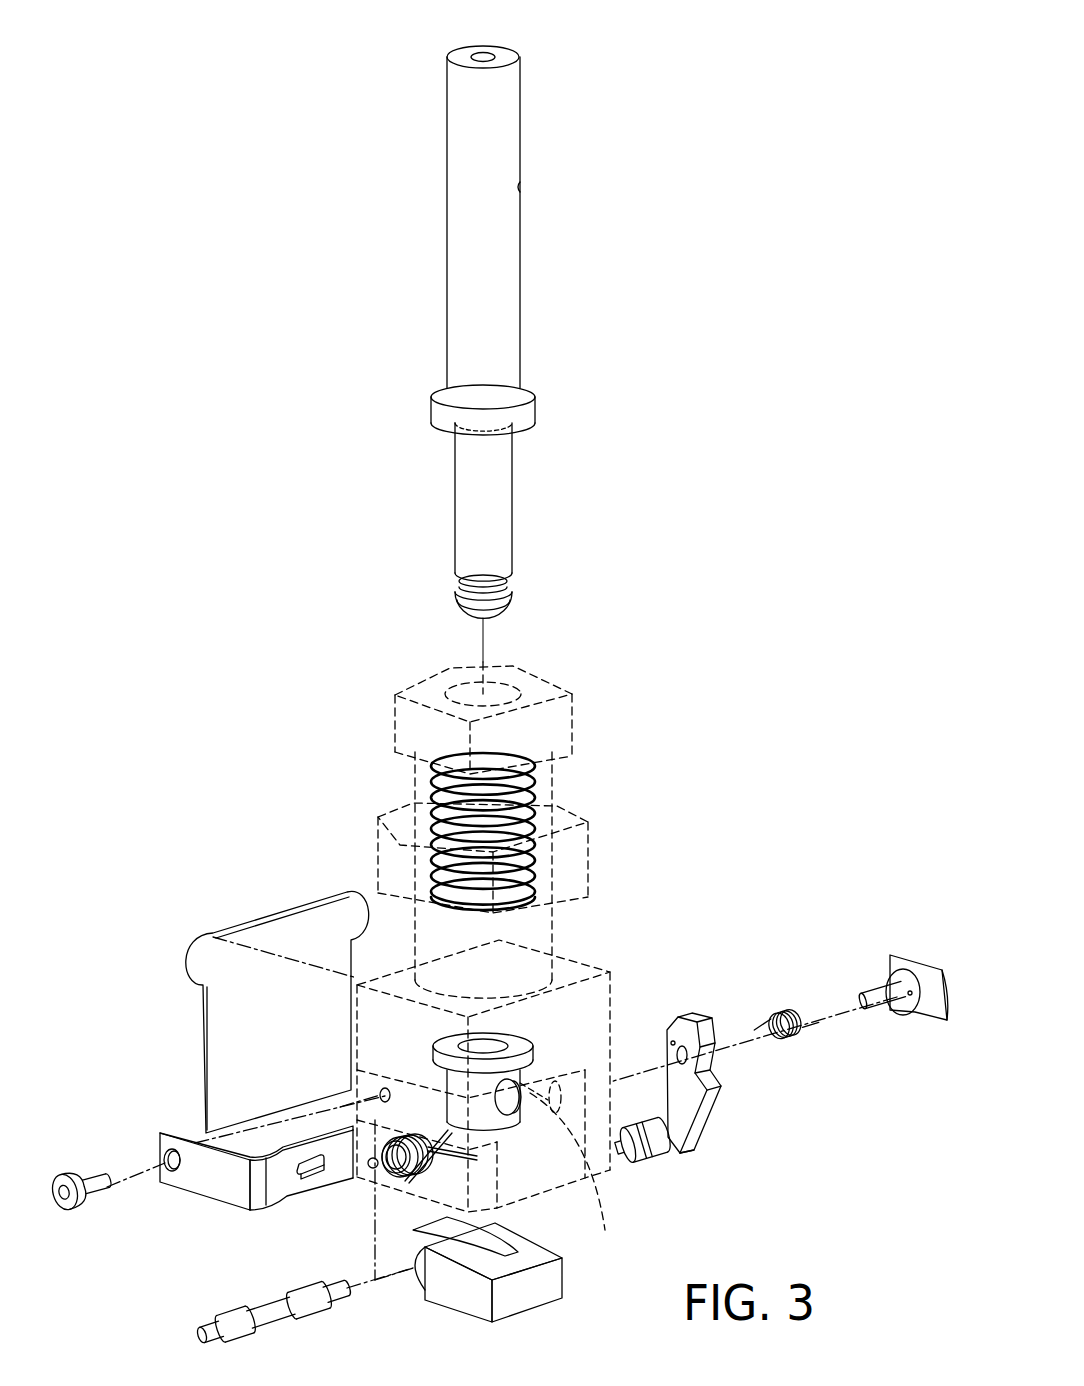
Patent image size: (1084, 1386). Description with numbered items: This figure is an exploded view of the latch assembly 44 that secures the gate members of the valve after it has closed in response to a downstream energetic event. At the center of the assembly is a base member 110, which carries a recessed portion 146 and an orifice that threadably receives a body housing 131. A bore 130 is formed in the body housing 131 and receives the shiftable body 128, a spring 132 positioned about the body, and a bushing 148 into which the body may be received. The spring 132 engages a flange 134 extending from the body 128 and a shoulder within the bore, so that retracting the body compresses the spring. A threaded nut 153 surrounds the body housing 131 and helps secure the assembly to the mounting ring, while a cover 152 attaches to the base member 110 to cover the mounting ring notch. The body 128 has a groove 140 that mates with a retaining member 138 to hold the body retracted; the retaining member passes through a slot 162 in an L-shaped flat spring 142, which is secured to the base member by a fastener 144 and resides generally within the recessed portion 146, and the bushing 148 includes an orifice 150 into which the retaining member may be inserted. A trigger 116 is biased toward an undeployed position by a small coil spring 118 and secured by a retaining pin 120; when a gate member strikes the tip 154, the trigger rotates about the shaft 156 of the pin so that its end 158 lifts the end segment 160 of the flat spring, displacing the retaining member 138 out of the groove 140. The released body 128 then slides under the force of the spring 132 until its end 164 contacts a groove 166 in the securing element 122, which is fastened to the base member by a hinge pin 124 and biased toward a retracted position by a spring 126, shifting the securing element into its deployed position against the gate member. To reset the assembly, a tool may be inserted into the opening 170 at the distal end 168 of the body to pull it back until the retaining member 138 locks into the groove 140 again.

The latch assembly 44 is at (663, 94).
The base member 110 is at (590, 970).
The trigger 116 is at (700, 1112).
The coil spring 118 is at (790, 1010).
The retaining pin 120 is at (925, 1012).
The securing element 122 is at (545, 1297).
The hinge pin 124 is at (275, 1315).
The spring 126 is at (445, 1178).
The shiftable body 128 is at (521, 283).
The bore 130 is at (505, 700).
The body housing 131 is at (540, 948).
The spring 132 is at (515, 800).
The flange 134 is at (530, 413).
The retaining member 138 is at (665, 1162).
The groove 140 is at (508, 585).
The L-shaped flat spring 142 is at (207, 1180).
The fastener 144 is at (95, 1178).
The recessed portion 146 is at (580, 1178).
The bushing 148 is at (458, 1087).
The orifice 150 is at (518, 1087).
The cover 152 is at (275, 925).
The threaded nut 153 is at (575, 872).
The tip 154 is at (690, 1150).
The shaft 156 is at (885, 1002).
The end 158 is at (705, 1025).
The end segment 160 is at (345, 1167).
The slot 162 is at (312, 1170).
The end 164 is at (470, 612).
The groove 166 is at (495, 1240).
The distal end 168 is at (521, 90).
The opening 170 is at (480, 56).